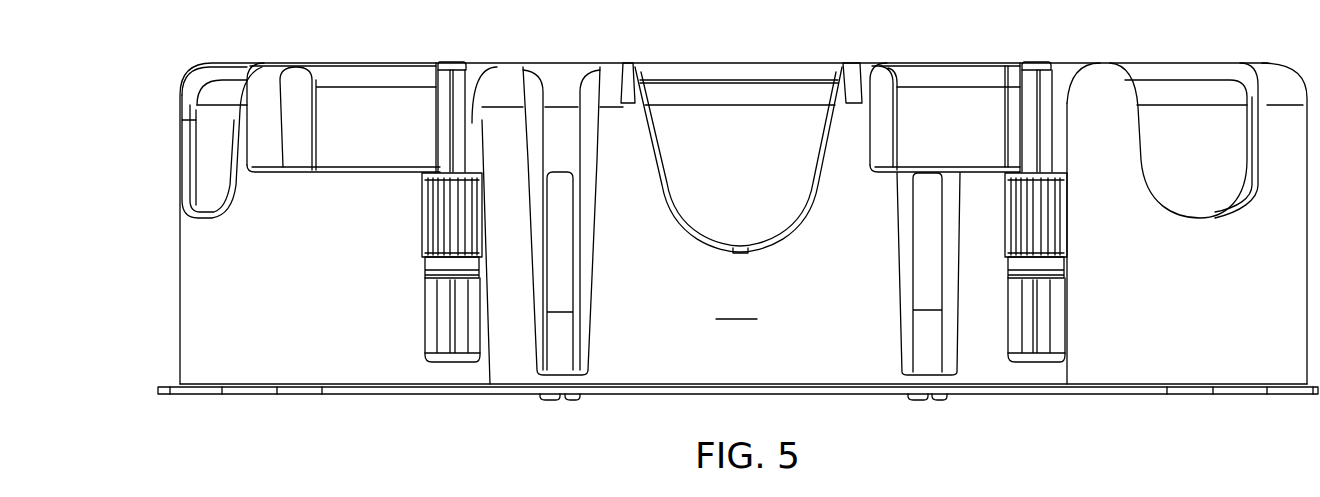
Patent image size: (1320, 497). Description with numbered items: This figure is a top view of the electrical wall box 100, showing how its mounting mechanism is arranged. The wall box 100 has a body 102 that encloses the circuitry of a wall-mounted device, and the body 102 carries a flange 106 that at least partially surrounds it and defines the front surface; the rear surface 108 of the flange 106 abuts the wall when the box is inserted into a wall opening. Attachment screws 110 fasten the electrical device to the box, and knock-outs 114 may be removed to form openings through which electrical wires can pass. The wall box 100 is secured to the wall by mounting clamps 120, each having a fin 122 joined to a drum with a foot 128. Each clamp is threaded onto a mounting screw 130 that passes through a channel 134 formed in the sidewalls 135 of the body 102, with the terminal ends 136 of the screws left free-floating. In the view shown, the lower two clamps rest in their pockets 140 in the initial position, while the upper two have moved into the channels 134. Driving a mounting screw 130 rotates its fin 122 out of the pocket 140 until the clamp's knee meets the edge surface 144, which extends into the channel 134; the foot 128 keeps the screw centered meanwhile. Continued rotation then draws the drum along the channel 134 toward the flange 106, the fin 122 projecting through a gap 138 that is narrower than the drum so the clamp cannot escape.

The electrical wall box 100 is at (930, 397).
The body 102 is at (795, 350).
The flange 106 is at (212, 394).
The rear surface 108 is at (245, 384).
The attachment screws 110 is at (565, 394).
The knock-outs 114 is at (218, 122).
The mounting clamps 120 is at (395, 217).
The fin 122 is at (460, 230).
The foot 128 is at (455, 283).
The mounting screws 130 is at (443, 95).
The channels 134 is at (433, 343).
The sidewalls 135 is at (741, 221).
The terminal ends 136 is at (452, 62).
The gap 138 is at (427, 317).
The pockets 140 is at (343, 110).
The edge surface 144 is at (472, 88).